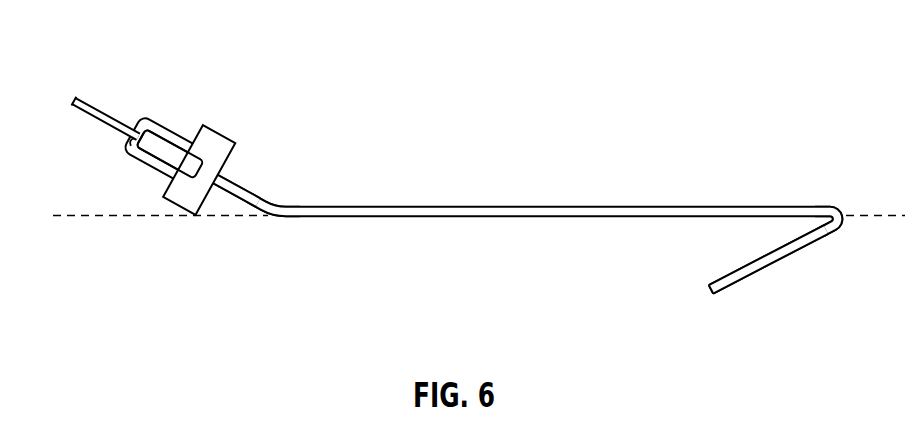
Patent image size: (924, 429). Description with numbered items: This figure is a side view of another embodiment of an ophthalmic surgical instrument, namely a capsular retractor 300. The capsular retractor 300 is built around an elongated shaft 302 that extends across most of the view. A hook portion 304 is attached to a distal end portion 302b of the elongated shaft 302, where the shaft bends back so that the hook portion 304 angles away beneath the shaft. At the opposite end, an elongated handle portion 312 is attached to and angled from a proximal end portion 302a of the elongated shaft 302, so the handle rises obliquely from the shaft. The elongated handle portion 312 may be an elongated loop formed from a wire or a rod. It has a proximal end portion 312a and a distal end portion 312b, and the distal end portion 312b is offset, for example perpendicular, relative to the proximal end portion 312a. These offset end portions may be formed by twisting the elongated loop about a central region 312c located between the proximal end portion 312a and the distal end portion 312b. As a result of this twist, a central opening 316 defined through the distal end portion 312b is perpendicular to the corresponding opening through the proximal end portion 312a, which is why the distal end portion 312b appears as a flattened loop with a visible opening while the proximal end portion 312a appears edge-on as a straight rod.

The capsular retractor 300 is at (454, 70).
The elongated shaft 302 is at (449, 204).
The proximal end portion of the elongated shaft 302a is at (293, 216).
The distal end portion of the elongated shaft 302b is at (817, 206).
The hook portion 304 is at (748, 273).
The elongated handle portion 312 is at (244, 185).
The proximal end portion of the elongated handle portion 312a is at (81, 99).
The distal end portion of the elongated handle portion 312b is at (168, 127).
The central region 312c is at (130, 145).
The central opening 316 is at (148, 143).